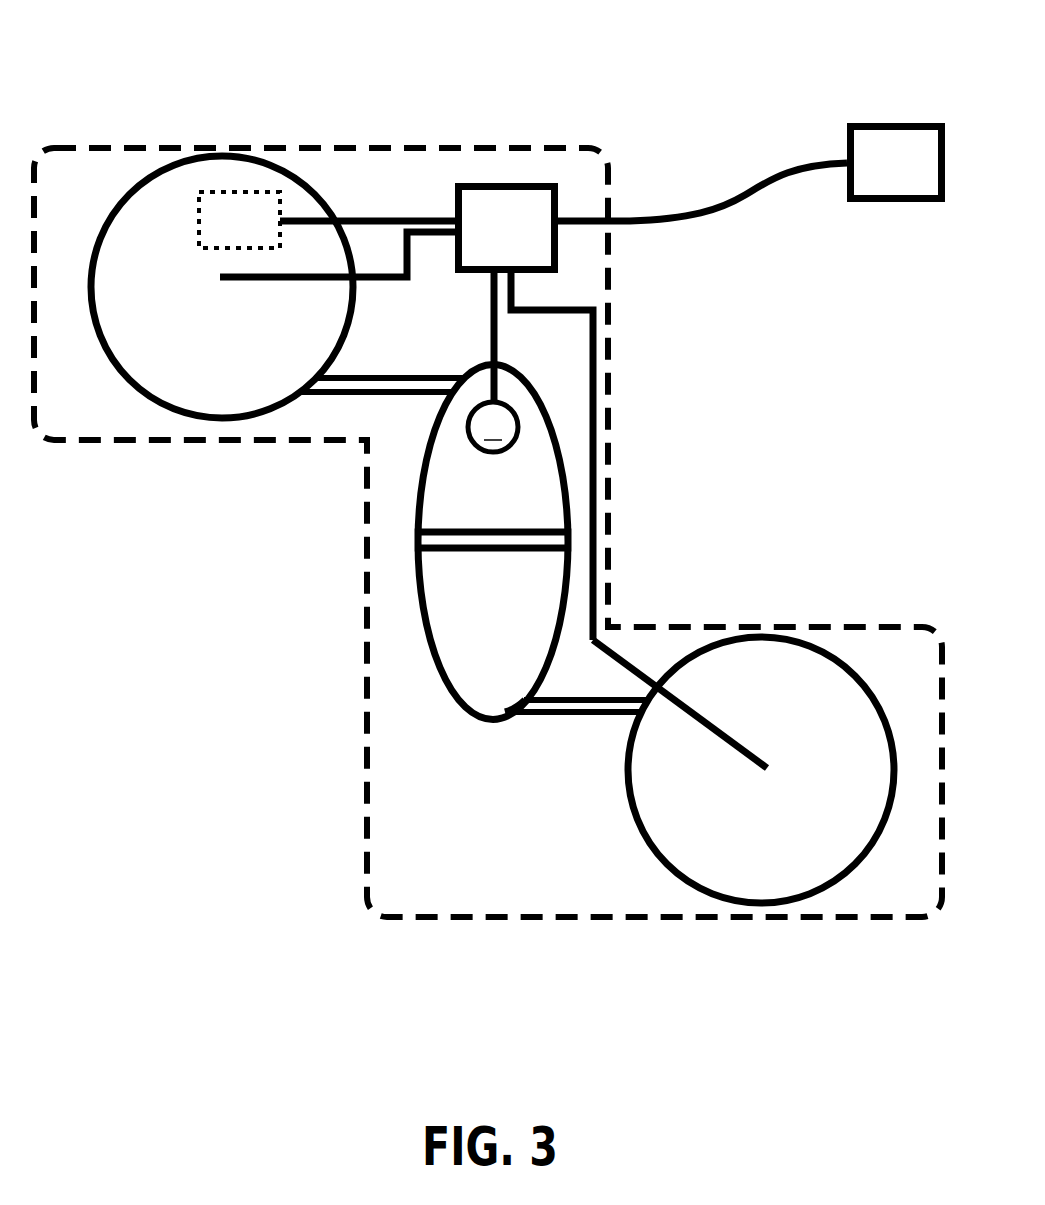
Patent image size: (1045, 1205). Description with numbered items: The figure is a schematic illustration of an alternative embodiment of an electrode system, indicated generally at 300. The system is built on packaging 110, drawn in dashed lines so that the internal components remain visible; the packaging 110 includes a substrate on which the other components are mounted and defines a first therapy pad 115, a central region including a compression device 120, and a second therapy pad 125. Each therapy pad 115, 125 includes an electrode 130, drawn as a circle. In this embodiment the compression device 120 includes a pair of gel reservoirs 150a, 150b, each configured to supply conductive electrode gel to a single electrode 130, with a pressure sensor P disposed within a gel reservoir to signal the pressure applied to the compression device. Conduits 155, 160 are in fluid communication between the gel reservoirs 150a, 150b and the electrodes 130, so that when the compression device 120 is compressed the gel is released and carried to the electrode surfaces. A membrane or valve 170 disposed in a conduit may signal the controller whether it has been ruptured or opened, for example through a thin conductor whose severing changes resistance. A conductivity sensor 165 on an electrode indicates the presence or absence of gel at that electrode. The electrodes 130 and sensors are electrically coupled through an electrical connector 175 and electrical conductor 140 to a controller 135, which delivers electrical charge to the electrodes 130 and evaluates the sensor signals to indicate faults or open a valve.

The electrode system 300 is at (660, 402).
The packaging 110 is at (396, 871).
The first therapy pad 115 is at (385, 133).
The compression device 120 is at (348, 452).
The second therapy pad 125 is at (595, 928).
The electrode 130 is at (158, 365).
The controller 135 is at (874, 176).
The electrical conductor 140 is at (730, 205).
The gel reservoir 150a is at (463, 496).
The gel reservoir 150b is at (463, 616).
The conduit 155 is at (372, 386).
The conduit 160 is at (585, 703).
The conductivity sensor 165 is at (218, 234).
The membrane or valve 170 is at (522, 708).
The electrical connector 175 is at (485, 241).